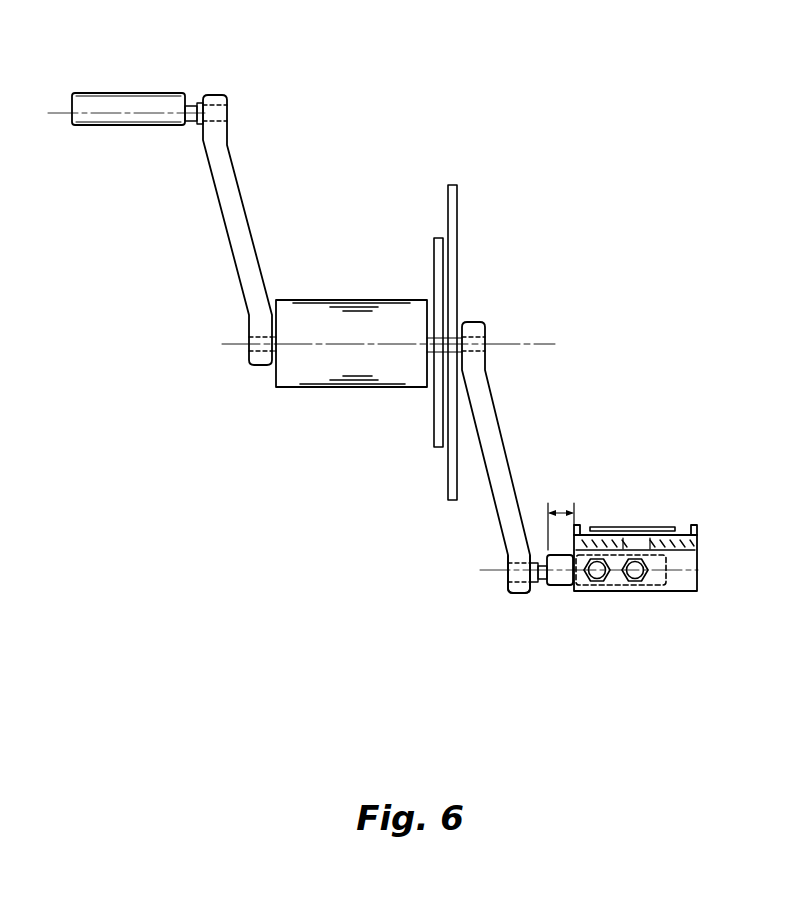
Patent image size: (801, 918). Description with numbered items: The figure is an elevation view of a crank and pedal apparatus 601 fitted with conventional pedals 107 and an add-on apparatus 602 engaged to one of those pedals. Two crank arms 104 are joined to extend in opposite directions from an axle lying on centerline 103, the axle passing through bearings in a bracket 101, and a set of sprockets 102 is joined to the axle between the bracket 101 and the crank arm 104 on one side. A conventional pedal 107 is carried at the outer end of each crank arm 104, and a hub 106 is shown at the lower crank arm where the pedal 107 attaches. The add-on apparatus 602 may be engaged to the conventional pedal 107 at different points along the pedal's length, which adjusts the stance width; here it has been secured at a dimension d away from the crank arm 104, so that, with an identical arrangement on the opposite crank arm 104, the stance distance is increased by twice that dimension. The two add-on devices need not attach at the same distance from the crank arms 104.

The bracket 101 is at (352, 388).
The set of sprockets 102 is at (462, 228).
The centerline 103 is at (548, 340).
The crank arms 104 is at (243, 202).
The hub 106 is at (484, 572).
The conventional pedal 107 is at (173, 92).
The crank and pedal apparatus 601 is at (370, 132).
The add-on apparatus 602 is at (688, 602).